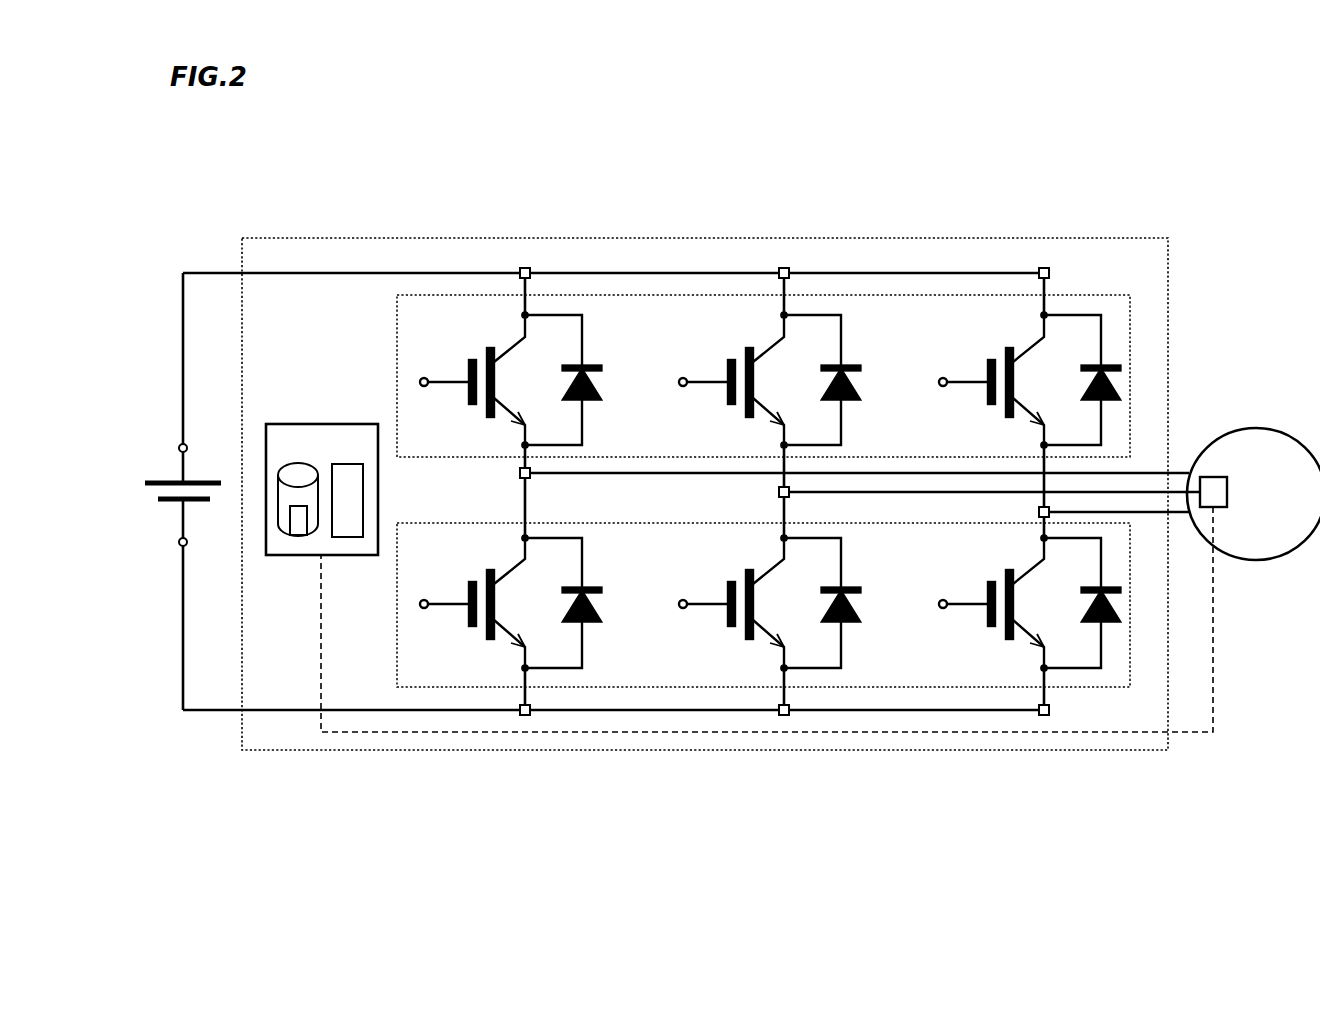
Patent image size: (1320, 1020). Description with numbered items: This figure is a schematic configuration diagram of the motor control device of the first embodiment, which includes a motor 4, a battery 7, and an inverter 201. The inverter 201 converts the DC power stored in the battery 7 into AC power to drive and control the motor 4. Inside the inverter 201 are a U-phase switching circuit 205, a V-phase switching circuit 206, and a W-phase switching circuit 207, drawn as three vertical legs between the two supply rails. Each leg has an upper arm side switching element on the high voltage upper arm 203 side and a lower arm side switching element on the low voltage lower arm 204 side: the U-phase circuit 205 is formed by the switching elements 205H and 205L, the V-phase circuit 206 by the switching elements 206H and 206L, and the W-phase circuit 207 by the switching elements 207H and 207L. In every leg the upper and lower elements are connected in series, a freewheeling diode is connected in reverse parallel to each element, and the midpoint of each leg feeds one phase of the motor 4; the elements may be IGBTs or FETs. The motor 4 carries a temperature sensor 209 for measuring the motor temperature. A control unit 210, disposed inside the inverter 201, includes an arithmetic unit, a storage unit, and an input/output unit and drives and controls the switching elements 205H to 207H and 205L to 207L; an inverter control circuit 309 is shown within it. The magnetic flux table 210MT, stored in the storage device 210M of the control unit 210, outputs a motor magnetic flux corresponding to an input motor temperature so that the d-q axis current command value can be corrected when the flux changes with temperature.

The inverter 201 is at (262, 250).
The upper arm 203 is at (1100, 316).
The lower arm 204 is at (1137, 677).
The U-phase switching circuit 205 is at (470, 459).
The V-phase switching circuit 206 is at (746, 459).
The W-phase switching circuit 207 is at (1007, 459).
The upper arm side switching element 205H is at (461, 360).
The lower arm side switching element 205L is at (462, 623).
The upper arm side switching element 206H is at (720, 360).
The lower arm side switching element 206L is at (727, 622).
The upper arm side switching element 207H is at (990, 362).
The lower arm side switching element 207L is at (986, 622).
The battery 7 is at (163, 452).
The motor 4 is at (1242, 448).
The temperature sensor 209 is at (1227, 492).
The control unit 210 is at (280, 476).
The storage device 210M is at (278, 487).
The magnetic flux table 210MT is at (292, 528).
The inverter control circuit 309 is at (363, 503).